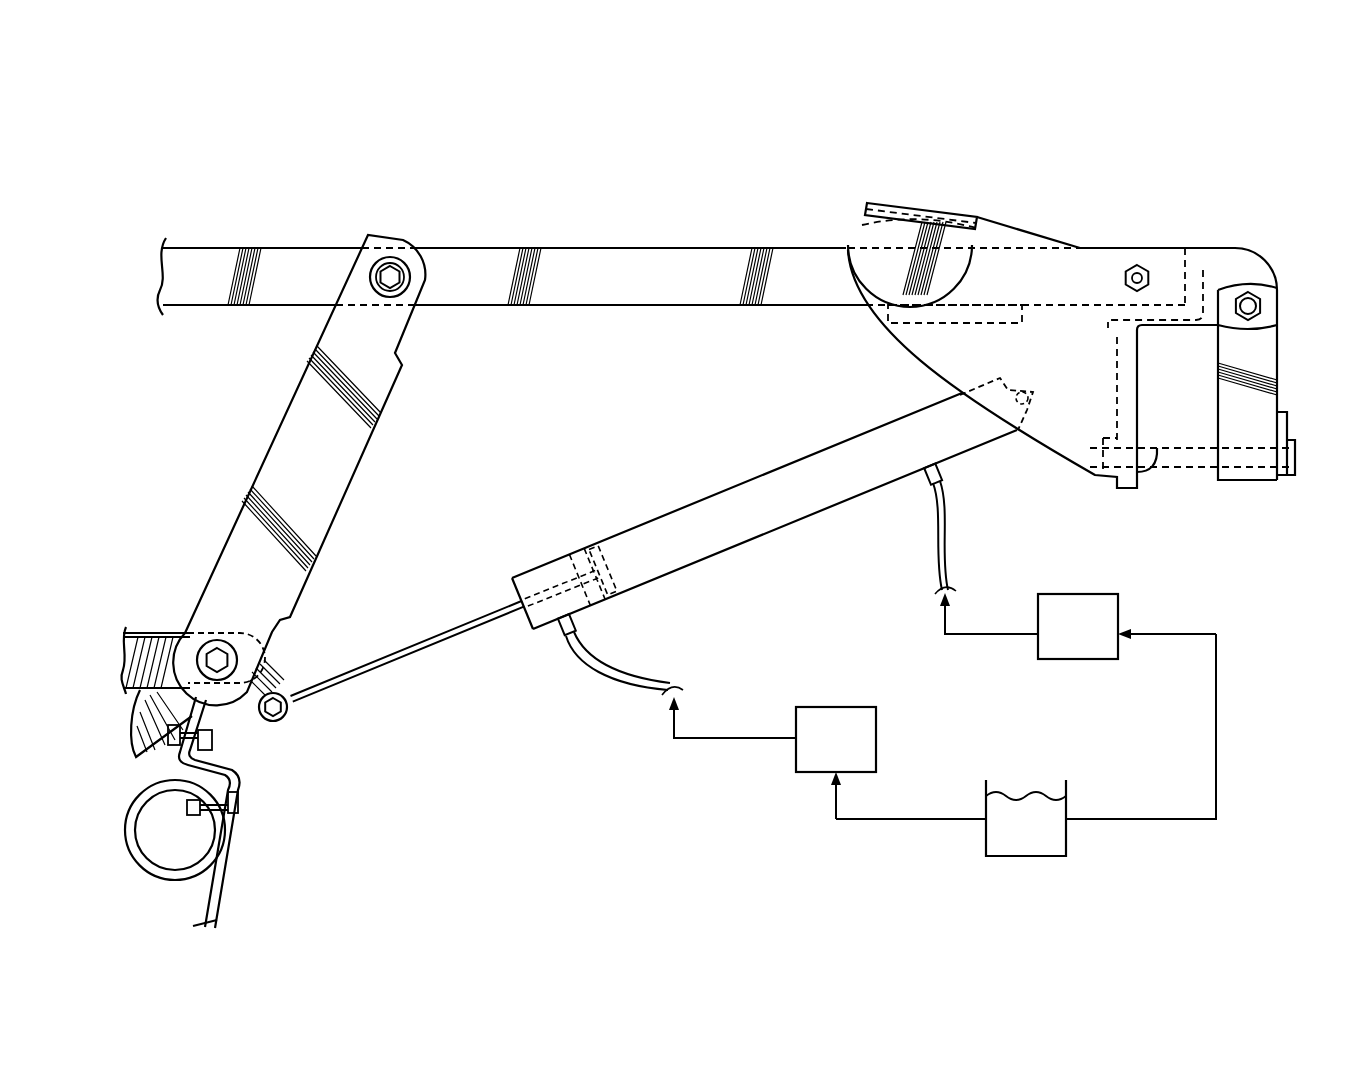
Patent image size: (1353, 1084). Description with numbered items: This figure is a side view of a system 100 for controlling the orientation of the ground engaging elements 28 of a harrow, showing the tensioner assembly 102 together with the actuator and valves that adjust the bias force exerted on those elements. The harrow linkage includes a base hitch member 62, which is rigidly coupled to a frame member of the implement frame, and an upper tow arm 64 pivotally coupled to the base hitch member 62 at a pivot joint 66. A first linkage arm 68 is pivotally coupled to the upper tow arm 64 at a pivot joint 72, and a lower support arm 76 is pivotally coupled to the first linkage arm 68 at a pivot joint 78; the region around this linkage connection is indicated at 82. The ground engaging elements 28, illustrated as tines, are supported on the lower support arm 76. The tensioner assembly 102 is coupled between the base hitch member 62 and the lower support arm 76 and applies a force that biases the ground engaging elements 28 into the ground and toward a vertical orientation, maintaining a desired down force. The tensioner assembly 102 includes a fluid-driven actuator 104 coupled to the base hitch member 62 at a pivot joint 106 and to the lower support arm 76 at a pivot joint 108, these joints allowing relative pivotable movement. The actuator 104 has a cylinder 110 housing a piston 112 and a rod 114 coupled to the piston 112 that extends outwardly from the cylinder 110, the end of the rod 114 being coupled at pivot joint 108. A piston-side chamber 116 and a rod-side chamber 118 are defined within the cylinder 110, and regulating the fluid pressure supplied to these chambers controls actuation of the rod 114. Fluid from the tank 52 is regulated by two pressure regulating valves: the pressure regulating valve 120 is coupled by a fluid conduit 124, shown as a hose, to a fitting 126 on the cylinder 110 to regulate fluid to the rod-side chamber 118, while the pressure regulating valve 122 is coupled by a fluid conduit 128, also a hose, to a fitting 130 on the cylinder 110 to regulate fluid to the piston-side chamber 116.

The system 100 is at (205, 158).
The pivot joint 82 is at (326, 238).
The pivot joint 72 is at (390, 262).
The upper tow arm 64 is at (655, 245).
The base hitch member 62 is at (1048, 272).
The pivot joint 66 is at (1137, 273).
The first linkage arm 68 is at (266, 455).
The tensioner assembly 102 is at (568, 432).
The fluid-driven actuator 104 is at (817, 428).
The cylinder 110 is at (744, 484).
The piston-side chamber 116 is at (683, 537).
The rod-side chamber 118 is at (542, 580).
The piston 112 is at (600, 566).
The rod 114 is at (398, 648).
The pivot joint 106 is at (1022, 406).
The pivot joint 108 is at (280, 722).
The fitting 130 is at (922, 494).
The fluid conduit 128 is at (933, 566).
The fitting 126 is at (566, 640).
The fluid conduit 124 is at (627, 672).
The pressure regulating valve 122 is at (1088, 594).
The pressure regulating valve 120 is at (800, 775).
The tank 52 is at (1030, 838).
The lower support arm 76 is at (148, 633).
The pivot joint 78 is at (185, 640).
The ground engaging elements 28 is at (225, 874).